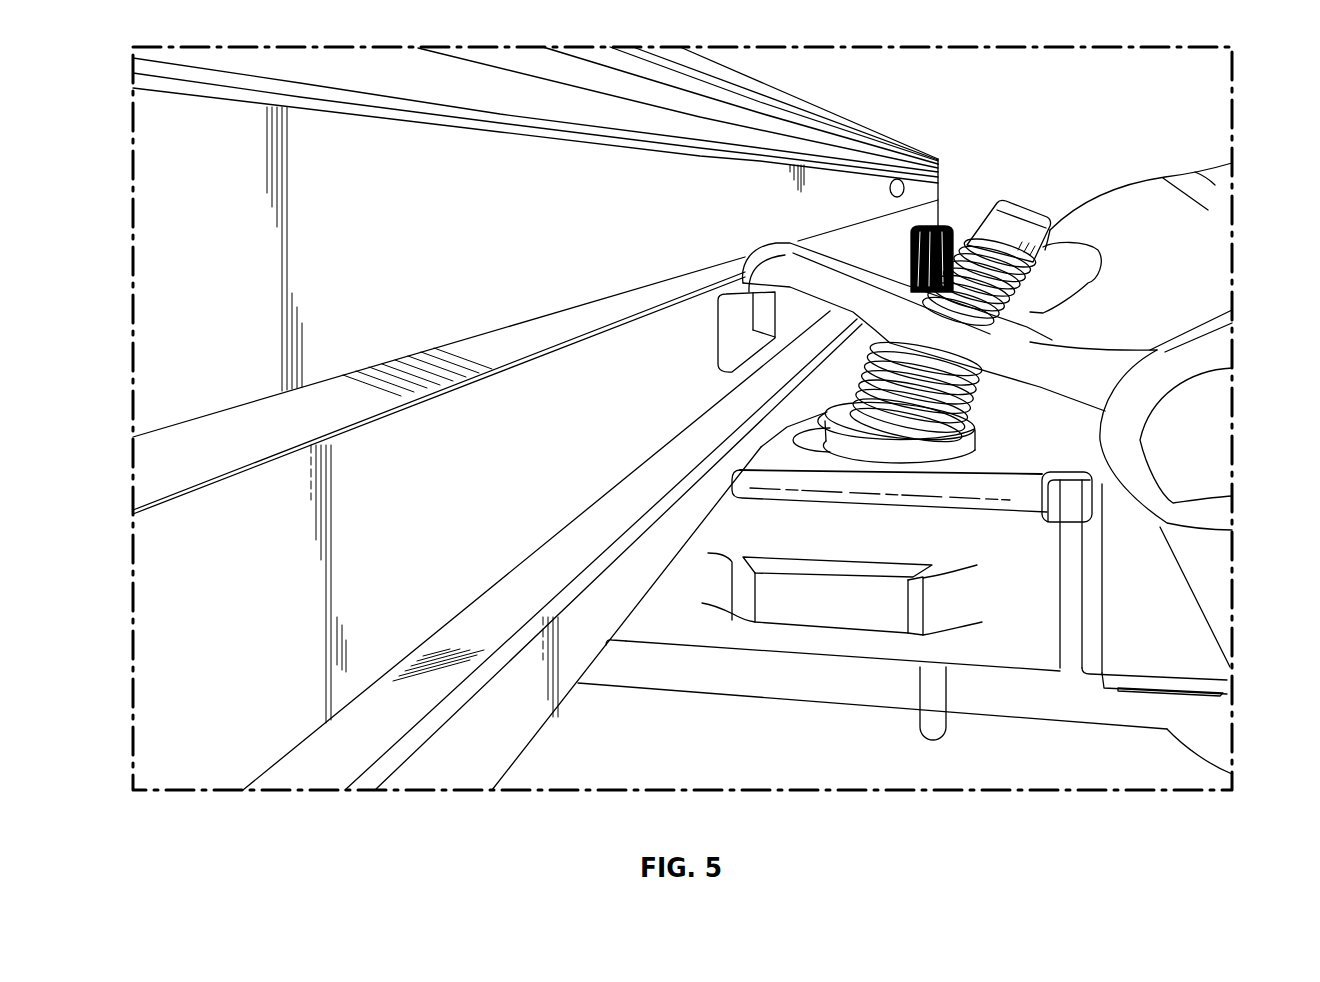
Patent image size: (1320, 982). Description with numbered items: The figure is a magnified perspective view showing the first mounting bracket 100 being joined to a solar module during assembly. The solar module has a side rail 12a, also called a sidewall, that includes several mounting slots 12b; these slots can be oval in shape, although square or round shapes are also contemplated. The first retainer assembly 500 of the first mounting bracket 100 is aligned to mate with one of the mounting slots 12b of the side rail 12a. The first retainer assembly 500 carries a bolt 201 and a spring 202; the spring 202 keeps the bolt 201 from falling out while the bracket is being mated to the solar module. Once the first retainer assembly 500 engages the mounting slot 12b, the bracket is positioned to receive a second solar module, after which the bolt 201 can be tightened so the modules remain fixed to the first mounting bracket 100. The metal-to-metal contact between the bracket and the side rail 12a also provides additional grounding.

The side rail 12a is at (150, 232).
The mounting slot 12b is at (702, 344).
The first mounting bracket 100 is at (1220, 613).
The bolt 201 is at (1048, 268).
The spring 202 is at (990, 422).
The first retainer assembly 500 is at (1108, 390).